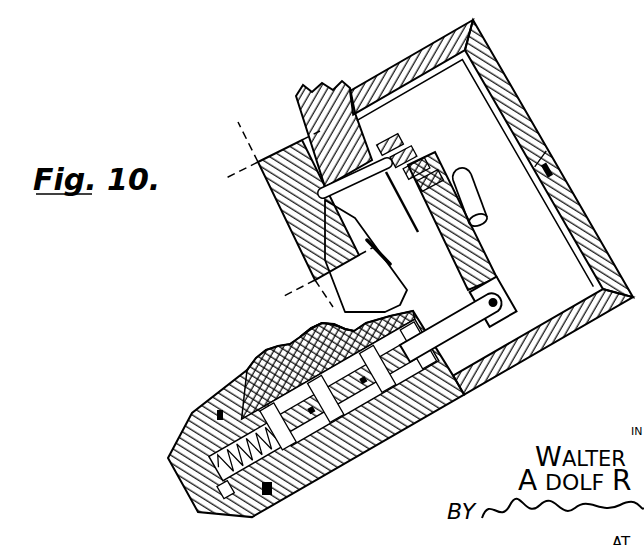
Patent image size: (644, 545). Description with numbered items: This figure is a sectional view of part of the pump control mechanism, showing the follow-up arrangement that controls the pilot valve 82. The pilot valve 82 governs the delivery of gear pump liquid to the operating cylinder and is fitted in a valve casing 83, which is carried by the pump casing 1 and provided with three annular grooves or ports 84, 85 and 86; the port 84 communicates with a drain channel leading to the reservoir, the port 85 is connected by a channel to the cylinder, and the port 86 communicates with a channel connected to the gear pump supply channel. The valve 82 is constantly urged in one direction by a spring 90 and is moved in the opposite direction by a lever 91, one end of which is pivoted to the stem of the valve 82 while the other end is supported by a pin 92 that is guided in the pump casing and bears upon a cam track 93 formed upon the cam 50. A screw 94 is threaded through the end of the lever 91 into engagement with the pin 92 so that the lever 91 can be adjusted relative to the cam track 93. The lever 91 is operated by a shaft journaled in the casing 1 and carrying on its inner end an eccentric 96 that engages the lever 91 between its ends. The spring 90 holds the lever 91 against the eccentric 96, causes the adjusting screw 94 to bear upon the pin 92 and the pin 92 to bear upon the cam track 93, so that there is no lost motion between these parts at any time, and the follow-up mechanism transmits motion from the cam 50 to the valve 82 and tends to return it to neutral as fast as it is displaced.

The casing 1 is at (275, 337).
The cam 50 is at (284, 207).
The pilot valve 82 is at (397, 310).
The valve casing 83 is at (366, 432).
The port 84 is at (285, 378).
The port 85 is at (322, 414).
The port 86 is at (362, 327).
The spring 90 is at (255, 464).
The lever 91 is at (480, 263).
The pin 92 is at (330, 190).
The cam track 93 is at (293, 152).
The screw 94 is at (420, 143).
The eccentric 96 is at (478, 190).